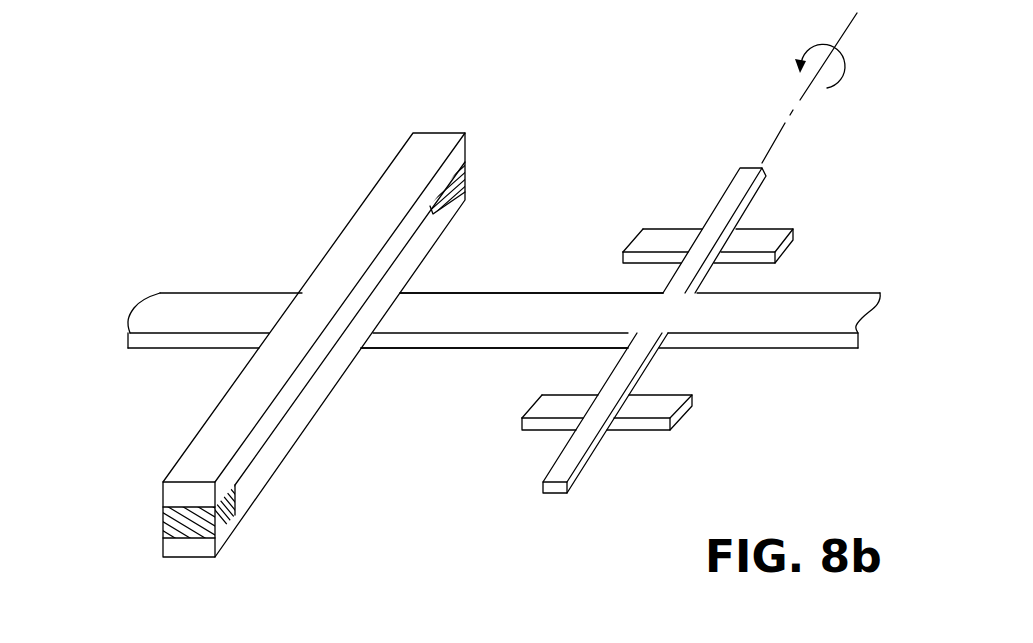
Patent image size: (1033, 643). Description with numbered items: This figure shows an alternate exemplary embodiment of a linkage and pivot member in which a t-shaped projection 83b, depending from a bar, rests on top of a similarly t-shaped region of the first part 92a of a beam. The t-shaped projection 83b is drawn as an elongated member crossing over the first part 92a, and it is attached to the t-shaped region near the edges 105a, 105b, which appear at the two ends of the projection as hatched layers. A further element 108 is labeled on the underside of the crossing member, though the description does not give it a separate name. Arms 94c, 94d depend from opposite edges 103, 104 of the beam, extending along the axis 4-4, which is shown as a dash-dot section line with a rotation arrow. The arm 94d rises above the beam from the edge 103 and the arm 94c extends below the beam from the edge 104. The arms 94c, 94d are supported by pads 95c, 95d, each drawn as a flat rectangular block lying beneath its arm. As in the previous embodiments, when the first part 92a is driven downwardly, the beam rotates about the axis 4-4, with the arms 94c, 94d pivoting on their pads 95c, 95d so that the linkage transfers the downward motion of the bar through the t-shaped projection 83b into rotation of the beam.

The first part of the beam 92a is at (541, 331).
The t-shaped projection 83b is at (247, 305).
The edge of the beam 103 is at (615, 293).
The edge of the beam 104 is at (617, 348).
The cross bar 108 is at (308, 425).
The edge 105a is at (163, 522).
The edge 105b is at (470, 170).
The arm 94d is at (685, 275).
The arm 94c is at (630, 363).
The pad 95d is at (763, 240).
The pad 95c is at (650, 402).
The axis 4-4 is at (785, 126).